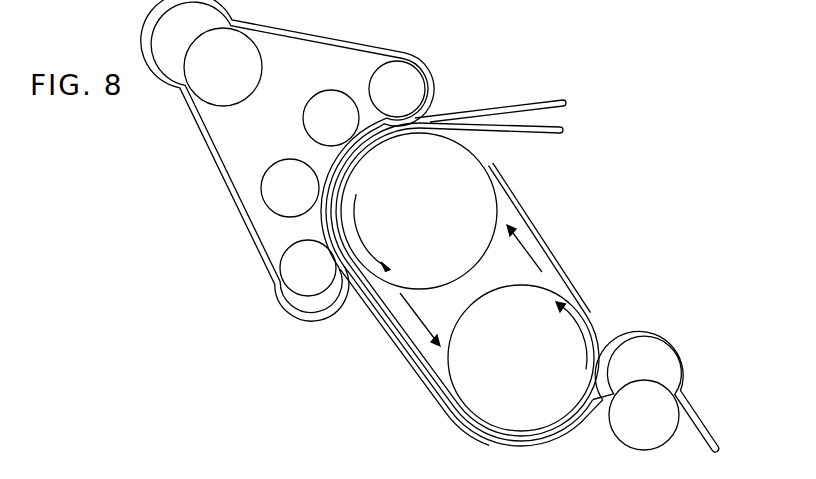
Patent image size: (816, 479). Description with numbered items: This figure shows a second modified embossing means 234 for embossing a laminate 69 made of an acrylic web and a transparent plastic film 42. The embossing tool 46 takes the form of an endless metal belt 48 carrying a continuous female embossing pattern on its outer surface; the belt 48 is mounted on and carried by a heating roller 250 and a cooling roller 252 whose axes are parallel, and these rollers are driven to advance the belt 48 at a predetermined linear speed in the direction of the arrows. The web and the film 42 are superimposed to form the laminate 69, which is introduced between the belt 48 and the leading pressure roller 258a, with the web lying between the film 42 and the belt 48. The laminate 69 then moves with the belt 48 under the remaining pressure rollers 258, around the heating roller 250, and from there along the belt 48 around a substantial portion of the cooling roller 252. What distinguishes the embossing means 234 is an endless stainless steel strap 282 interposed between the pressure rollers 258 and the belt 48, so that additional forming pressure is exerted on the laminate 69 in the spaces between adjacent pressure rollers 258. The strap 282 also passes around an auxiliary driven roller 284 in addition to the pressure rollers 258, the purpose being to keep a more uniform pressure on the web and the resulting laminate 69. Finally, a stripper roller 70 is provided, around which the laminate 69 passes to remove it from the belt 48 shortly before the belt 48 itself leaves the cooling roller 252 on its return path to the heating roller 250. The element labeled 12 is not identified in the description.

The endless stainless steel strap 282 is at (358, 44).
The auxiliary driven roller 284 is at (243, 63).
The leading pressure roller 258a is at (393, 78).
The pressure rollers 258 is at (325, 125).
The transparent plastic film 42 is at (502, 107).
The copy sheet 12 is at (525, 133).
The heating roller 250 is at (470, 200).
The embossing tool 46 is at (547, 236).
The second modified embossing means 234 is at (577, 269).
The endless metal belt 48 is at (592, 307).
The laminate 69 is at (421, 372).
The cooling roller 252 is at (510, 413).
The stripper roller 70 is at (618, 442).